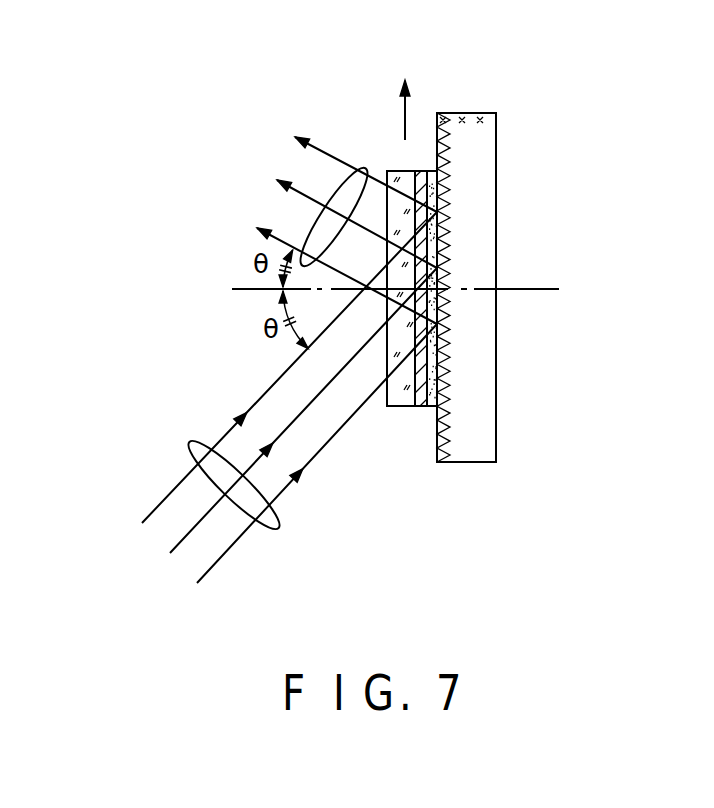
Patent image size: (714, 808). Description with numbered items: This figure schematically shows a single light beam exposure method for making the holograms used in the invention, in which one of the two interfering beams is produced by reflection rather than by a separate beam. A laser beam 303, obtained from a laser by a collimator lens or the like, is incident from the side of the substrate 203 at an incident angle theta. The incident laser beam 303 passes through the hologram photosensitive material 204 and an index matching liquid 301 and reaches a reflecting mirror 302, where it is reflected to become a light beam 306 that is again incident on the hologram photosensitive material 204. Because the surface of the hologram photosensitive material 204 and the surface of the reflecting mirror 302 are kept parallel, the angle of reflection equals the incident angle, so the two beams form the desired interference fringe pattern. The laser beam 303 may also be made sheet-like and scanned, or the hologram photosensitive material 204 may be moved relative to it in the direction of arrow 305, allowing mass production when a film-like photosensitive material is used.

The substrate 203 is at (392, 407).
The hologram photosensitive material 204 is at (425, 407).
The index matching liquid 301 is at (432, 407).
The reflecting mirror 302 is at (466, 113).
The laser beam 303 is at (276, 526).
The arrow 305 is at (404, 95).
The light beam 306 is at (363, 164).